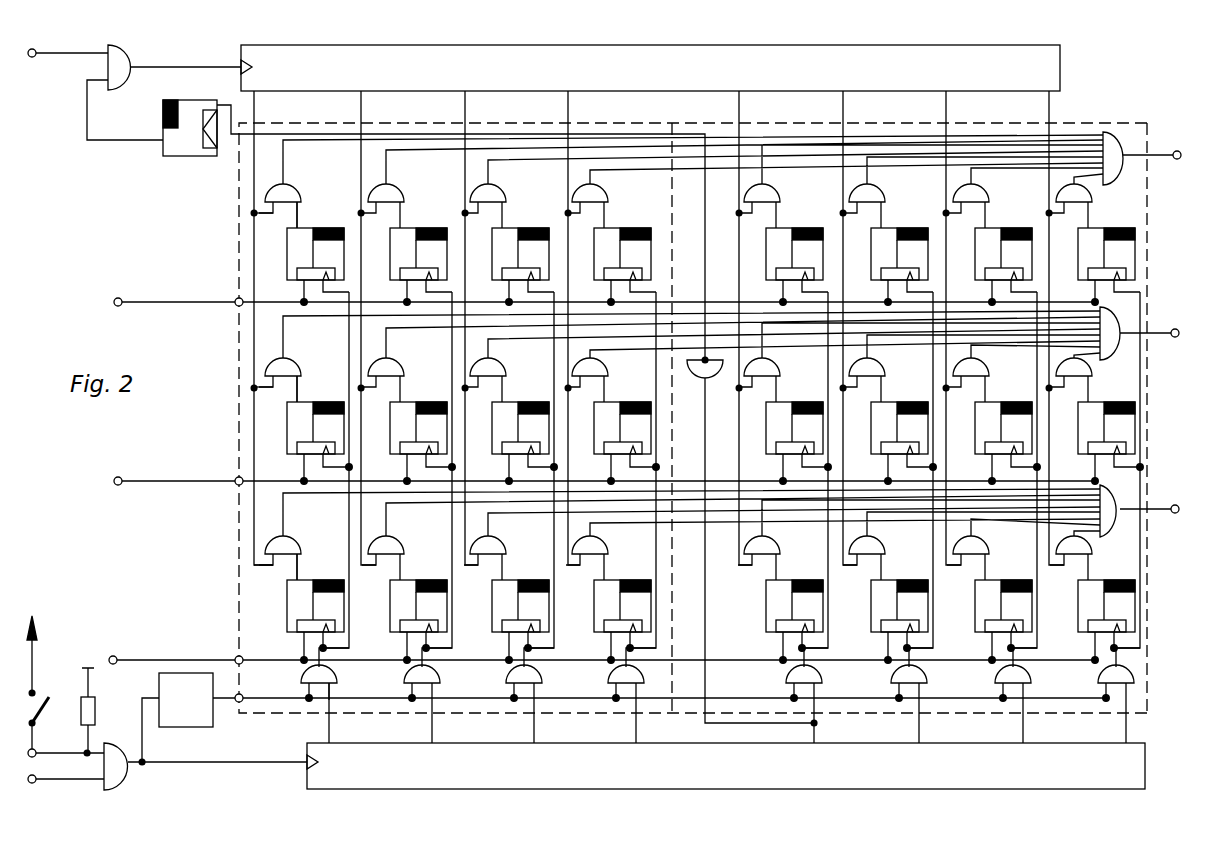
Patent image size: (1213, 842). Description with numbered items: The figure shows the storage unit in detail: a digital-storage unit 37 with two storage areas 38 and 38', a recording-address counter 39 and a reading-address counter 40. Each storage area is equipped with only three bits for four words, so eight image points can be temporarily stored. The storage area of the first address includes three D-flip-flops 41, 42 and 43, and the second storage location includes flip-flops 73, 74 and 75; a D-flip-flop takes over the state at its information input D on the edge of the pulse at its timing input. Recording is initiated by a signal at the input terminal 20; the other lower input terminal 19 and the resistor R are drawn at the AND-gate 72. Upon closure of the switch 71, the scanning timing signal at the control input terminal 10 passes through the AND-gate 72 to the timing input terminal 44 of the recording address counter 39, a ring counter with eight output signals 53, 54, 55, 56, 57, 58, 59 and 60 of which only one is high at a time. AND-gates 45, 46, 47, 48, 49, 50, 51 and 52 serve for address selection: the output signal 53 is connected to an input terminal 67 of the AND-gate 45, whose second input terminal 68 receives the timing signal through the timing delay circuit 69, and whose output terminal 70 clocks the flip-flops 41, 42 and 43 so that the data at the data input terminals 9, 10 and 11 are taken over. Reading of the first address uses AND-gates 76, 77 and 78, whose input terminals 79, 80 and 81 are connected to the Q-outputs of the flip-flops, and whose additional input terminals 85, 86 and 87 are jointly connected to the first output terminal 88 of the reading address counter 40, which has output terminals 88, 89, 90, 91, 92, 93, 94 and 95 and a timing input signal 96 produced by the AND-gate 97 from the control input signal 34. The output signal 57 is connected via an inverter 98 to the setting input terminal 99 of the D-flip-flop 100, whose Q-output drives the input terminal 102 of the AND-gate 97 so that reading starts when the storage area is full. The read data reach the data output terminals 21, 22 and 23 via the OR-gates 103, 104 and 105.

The data input terminal 9 is at (118, 299).
The data input terminal 10 is at (118, 478).
The data input terminal 11 is at (113, 656).
The input terminal 19 is at (36, 783).
The input terminal 20 is at (36, 752).
The data output terminal 21 is at (1175, 504).
The data output terminal 22 is at (1175, 328).
The data output terminal 23 is at (1177, 150).
The control input signal 34 is at (36, 52).
The digital-storage unit 37 is at (1118, 122).
The storage area 38 is at (425, 418).
The storage area 38' is at (1169, 418).
The recording-address counter 39 is at (308, 780).
The reading-address counter 40 is at (1062, 65).
The D-flip-flop 41 is at (290, 612).
The D-flip-flop 42 is at (296, 436).
The D-flip-flop 43 is at (296, 263).
The timing input terminal 44 is at (305, 760).
The AND-gate 45 is at (318, 668).
The AND-gate 46 is at (434, 672).
The AND-gate 47 is at (536, 672).
The AND-gate 48 is at (630, 672).
The AND-gate 49 is at (792, 672).
The AND-gate 50 is at (897, 672).
The AND-gate 51 is at (1001, 672).
The AND-gate 52 is at (1104, 672).
The output signal 53 is at (331, 740).
The output signal 54 is at (434, 740).
The output signal 55 is at (536, 740).
The output signal 56 is at (638, 740).
The output signal 57 is at (816, 740).
The output signal 58 is at (921, 740).
The output signal 59 is at (1025, 740).
The output signal 60 is at (1128, 740).
The input terminal 67 is at (330, 689).
The second input terminal 68 is at (303, 698).
The timing delay circuit 69 is at (160, 688).
The output terminal 70 is at (308, 670).
The switch 71 is at (35, 693).
The AND-gate 72 is at (130, 773).
The flip-flop 73 is at (398, 586).
The flip-flop 74 is at (398, 416).
The flip-flop 75 is at (398, 240).
The AND-gate 76 is at (290, 549).
The AND-gate 77 is at (290, 368).
The AND-gate 78 is at (290, 186).
The input terminal 79 is at (297, 556).
The input terminal 80 is at (297, 380).
The input terminal 81 is at (299, 206).
The additional input terminal 85 is at (276, 566).
The additional input terminal 86 is at (254, 388).
The additional input terminal 87 is at (254, 213).
The output terminal 88 is at (257, 93).
The output terminal 89 is at (364, 93).
The output terminal 90 is at (468, 93).
The output terminal 91 is at (571, 93).
The output terminal 92 is at (742, 93).
The output terminal 93 is at (846, 93).
The output terminal 94 is at (949, 93).
The output terminal 95 is at (1052, 93).
The timing input signal 96 is at (240, 70).
The AND-gate 97 is at (127, 70).
The inverter 98 is at (708, 378).
The setting input terminal 99 is at (220, 150).
The D-flip-flop 100 is at (165, 148).
The input terminal 102 is at (108, 84).
The OR-gate 103 is at (1110, 534).
The OR-gate 104 is at (1112, 357).
The OR-gate 105 is at (1112, 176).
The resistor R is at (98, 710).